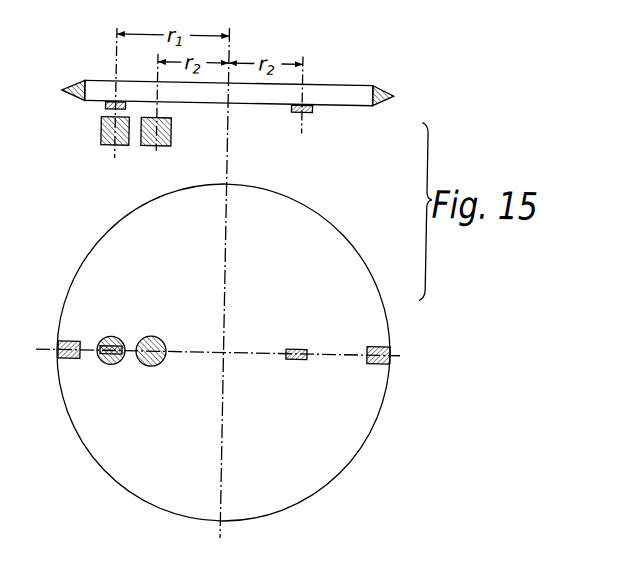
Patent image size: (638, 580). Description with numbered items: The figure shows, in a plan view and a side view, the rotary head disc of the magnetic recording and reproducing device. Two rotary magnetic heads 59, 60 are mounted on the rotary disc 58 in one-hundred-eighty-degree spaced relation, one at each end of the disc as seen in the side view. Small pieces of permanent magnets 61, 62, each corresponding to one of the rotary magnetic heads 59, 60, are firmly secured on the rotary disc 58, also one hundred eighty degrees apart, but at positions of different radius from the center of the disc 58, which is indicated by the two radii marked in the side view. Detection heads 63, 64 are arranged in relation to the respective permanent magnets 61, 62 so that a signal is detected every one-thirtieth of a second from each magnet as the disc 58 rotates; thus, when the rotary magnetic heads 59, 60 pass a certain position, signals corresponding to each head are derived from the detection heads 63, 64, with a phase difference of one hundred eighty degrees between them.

The rotary disc 58 is at (336, 90).
The rotary magnetic head 59 is at (76, 86).
The rotary magnetic head 60 is at (374, 97).
The permanent magnet 61 is at (99, 108).
The permanent magnet 62 is at (288, 108).
The detection head 63 is at (96, 138).
The detection head 64 is at (166, 142).